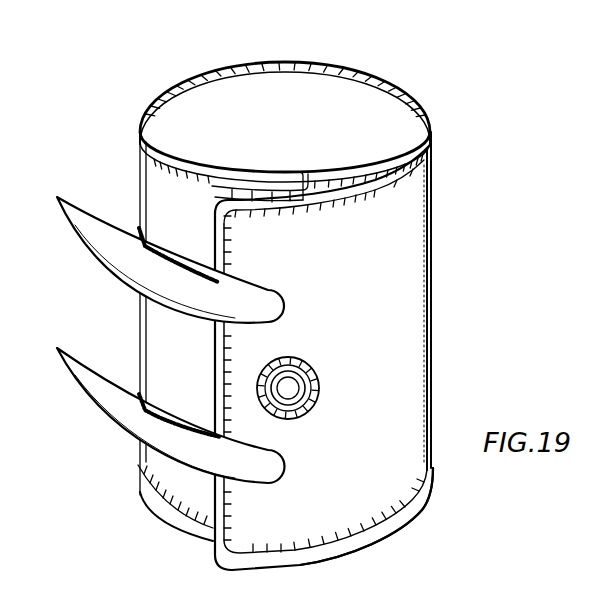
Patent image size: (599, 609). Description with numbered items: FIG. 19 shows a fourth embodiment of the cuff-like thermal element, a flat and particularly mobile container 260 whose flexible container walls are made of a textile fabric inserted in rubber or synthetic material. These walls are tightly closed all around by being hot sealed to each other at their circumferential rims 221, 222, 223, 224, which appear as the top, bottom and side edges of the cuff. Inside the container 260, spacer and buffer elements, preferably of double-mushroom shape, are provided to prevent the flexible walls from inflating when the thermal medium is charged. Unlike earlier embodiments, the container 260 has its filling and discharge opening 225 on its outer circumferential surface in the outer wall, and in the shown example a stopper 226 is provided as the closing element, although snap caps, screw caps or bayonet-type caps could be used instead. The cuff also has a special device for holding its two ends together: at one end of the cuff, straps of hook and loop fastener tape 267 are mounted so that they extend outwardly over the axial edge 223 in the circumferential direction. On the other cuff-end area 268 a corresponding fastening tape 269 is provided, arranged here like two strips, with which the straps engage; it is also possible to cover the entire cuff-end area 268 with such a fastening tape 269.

The container 260 is at (428, 86).
The circumferential rim 221 is at (268, 62).
The circumferential rim 222 is at (413, 512).
The axial edge 223 is at (247, 328).
The circumferential rim 224 is at (309, 180).
The filling and discharge opening 225 is at (310, 364).
The stopper 226 is at (291, 393).
The straps of hook and loop fastener tape 267 is at (90, 232).
The cuff-end area 268 is at (306, 172).
The fastening tape 269 is at (136, 234).